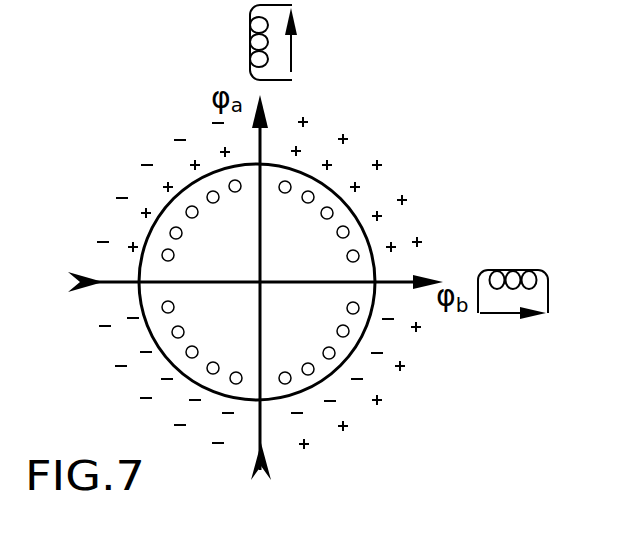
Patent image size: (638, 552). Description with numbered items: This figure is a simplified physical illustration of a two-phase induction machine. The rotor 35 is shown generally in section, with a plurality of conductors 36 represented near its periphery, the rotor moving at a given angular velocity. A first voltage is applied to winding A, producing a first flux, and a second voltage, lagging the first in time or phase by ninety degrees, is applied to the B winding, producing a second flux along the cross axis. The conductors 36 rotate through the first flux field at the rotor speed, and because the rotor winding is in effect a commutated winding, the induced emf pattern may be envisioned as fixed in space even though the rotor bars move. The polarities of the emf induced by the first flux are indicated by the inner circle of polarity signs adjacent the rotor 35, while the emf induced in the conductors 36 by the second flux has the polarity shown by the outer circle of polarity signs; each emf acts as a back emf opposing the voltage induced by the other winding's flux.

The rotor 35 is at (314, 325).
The conductors 36 is at (198, 215).
The winding A is at (319, 42).
The B winding B is at (517, 302).